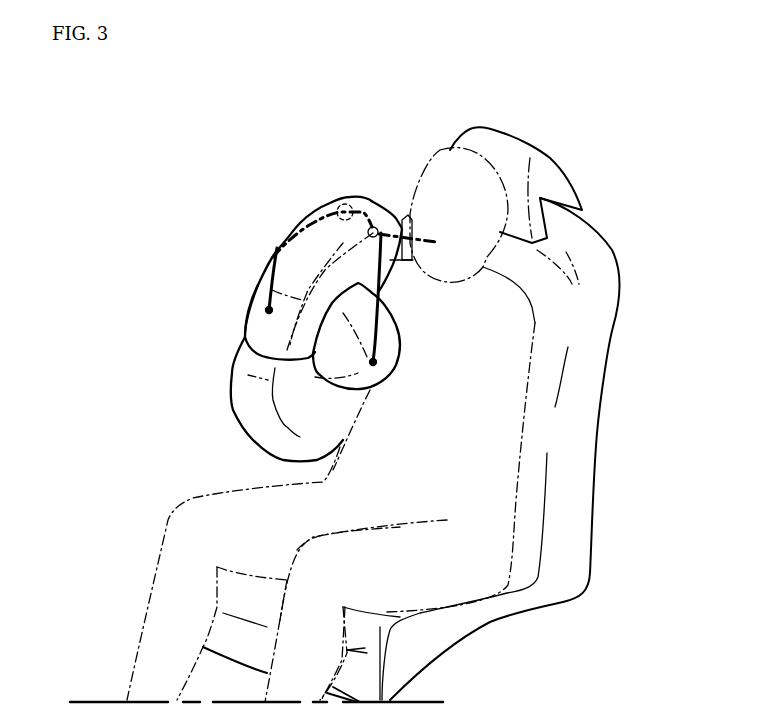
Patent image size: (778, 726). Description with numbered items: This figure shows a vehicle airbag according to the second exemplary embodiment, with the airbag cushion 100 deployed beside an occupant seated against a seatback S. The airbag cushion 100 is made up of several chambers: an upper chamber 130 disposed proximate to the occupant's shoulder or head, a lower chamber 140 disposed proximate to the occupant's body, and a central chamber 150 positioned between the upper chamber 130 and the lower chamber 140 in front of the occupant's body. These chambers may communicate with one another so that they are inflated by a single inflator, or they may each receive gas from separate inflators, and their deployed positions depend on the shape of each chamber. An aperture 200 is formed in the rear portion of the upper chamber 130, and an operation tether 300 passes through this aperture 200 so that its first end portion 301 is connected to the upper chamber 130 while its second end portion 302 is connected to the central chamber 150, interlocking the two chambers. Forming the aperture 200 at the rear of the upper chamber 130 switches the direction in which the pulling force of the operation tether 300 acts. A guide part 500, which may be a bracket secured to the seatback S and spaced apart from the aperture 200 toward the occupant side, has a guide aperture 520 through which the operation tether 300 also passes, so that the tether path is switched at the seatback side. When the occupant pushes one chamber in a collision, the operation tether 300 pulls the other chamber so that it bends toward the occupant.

The airbag cushion 100 is at (430, 270).
The upper chamber 130 is at (253, 332).
The lower chamber 140 is at (263, 422).
The central chamber 150 is at (323, 363).
The aperture 200 is at (333, 203).
The operation tether 300 is at (368, 305).
The first end portion 301 is at (263, 283).
The second end portion 302 is at (380, 343).
The guide part 500 is at (410, 215).
The guide aperture 520 is at (376, 226).
The seatback S is at (607, 345).